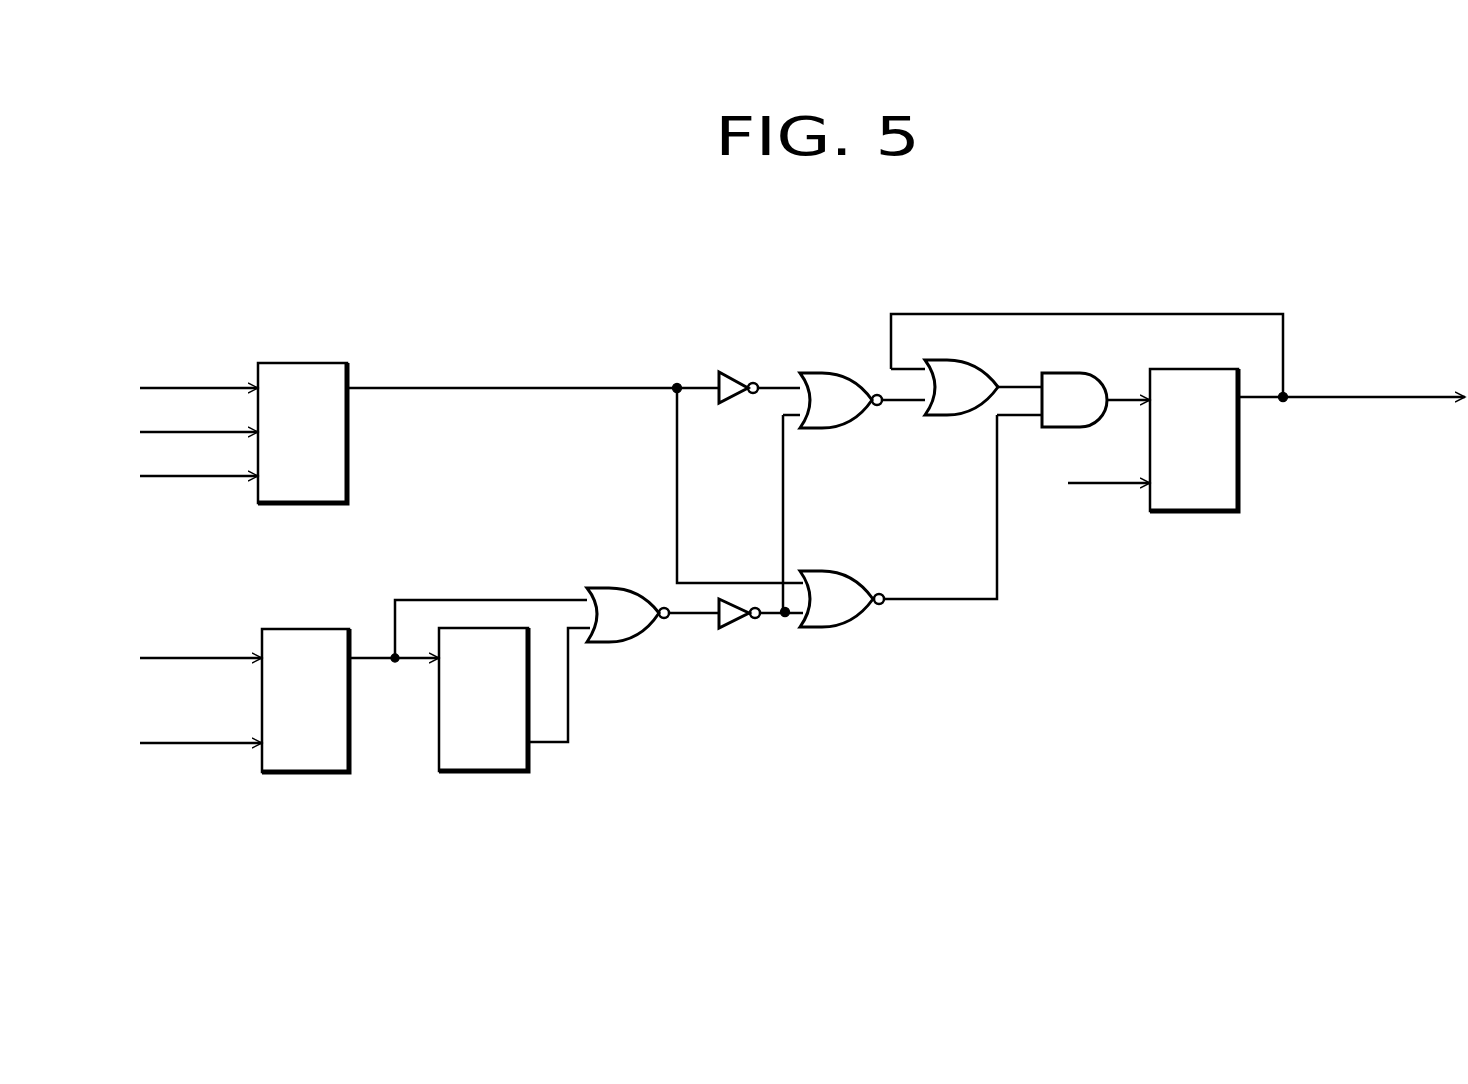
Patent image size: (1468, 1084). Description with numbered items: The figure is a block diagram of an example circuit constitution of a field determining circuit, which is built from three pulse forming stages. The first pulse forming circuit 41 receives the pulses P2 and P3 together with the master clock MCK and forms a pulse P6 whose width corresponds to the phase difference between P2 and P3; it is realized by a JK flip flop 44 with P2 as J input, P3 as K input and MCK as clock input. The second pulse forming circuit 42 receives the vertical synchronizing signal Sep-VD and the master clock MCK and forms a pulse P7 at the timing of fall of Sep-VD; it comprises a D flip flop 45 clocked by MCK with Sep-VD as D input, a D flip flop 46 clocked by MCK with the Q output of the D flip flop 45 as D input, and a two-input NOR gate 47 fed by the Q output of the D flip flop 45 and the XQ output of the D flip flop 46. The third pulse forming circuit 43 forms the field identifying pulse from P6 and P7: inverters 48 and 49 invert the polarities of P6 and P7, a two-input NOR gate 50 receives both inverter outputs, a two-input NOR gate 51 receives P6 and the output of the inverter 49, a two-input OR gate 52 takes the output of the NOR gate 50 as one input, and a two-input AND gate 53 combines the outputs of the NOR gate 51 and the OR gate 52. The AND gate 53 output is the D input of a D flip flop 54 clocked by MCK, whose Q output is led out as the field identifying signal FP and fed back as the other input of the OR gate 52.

The first pulse forming circuit 41 is at (393, 345).
The second pulse forming circuit 42 is at (435, 808).
The third pulse forming circuit 43 is at (817, 695).
The JK flip flop 44 is at (347, 490).
The D flip flop 45 is at (331, 629).
The D flip flop 46 is at (528, 760).
The two-input NOR gate 47 is at (612, 645).
The inverter 48 is at (732, 370).
The inverter 49 is at (738, 625).
The two-input NOR gate 50 is at (822, 373).
The two-input NOR gate 51 is at (832, 571).
The two-input OR gate 52 is at (968, 360).
The two-input AND gate 53 is at (1072, 373).
The D flip flop 54 is at (1208, 369).